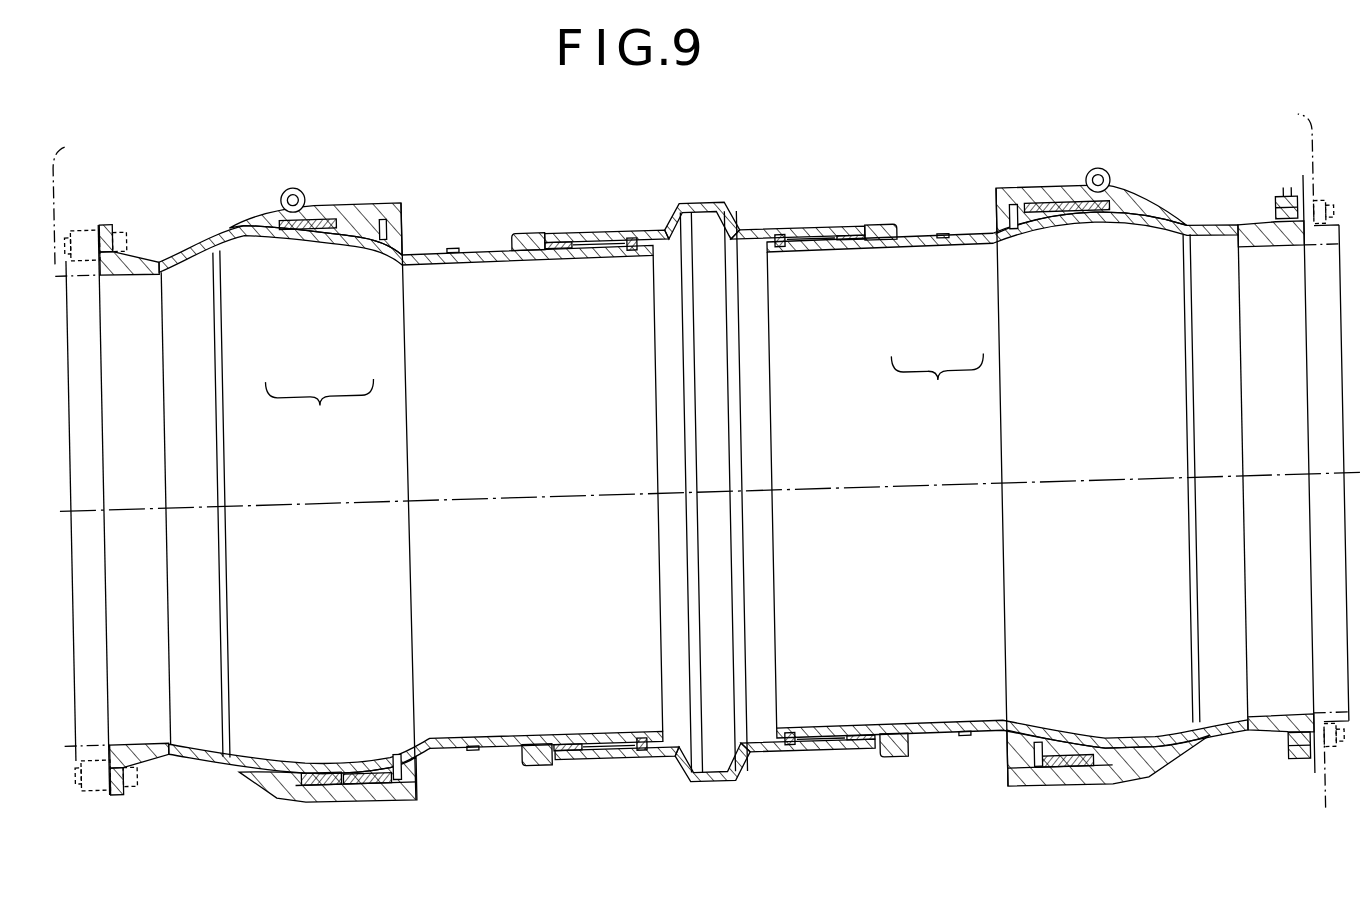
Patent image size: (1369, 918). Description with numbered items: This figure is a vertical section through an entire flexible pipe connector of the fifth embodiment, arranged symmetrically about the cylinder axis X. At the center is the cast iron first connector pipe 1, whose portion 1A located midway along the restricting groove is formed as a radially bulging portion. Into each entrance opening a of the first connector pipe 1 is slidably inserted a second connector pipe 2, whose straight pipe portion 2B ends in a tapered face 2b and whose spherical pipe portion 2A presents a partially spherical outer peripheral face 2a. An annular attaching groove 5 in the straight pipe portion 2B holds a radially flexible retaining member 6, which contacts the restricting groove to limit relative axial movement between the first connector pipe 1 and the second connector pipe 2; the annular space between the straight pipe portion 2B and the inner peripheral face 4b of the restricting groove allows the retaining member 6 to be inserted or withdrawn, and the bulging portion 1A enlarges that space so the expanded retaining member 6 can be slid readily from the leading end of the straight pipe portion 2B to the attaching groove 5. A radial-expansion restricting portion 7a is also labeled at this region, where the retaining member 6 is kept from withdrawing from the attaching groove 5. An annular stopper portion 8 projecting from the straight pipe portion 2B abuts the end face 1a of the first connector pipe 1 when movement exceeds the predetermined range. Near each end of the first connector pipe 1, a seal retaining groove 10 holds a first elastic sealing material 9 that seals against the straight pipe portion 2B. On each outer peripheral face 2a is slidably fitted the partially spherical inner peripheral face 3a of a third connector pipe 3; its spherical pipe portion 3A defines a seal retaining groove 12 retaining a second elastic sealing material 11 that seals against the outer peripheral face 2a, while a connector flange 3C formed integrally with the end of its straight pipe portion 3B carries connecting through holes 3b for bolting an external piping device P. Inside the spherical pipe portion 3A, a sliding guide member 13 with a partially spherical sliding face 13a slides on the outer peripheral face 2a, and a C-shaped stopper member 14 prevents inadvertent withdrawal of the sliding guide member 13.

The external piping device P is at (701, 465).
The cylinder axis X is at (470, 492).
The first connector pipe 1 is at (576, 229).
The bulging portion 1A is at (708, 203).
The end face 1a is at (517, 229).
The second connector pipe 2 is at (624, 394).
The spherical pipe portion 2A is at (330, 222).
The straight pipe portion 2B is at (425, 256).
The partially spherical outer peripheral face 2a is at (220, 232).
The tapered face 2b is at (661, 765).
The third connector pipe 3 is at (338, 194).
The spherical pipe portion 3A is at (268, 784).
The straight pipe portion 3B is at (132, 765).
The connector flange 3C is at (111, 207).
The partially spherical inner peripheral face 3a is at (240, 758).
The connecting through holes 3b is at (130, 219).
The inner peripheral face of the restricting groove 4b is at (752, 252).
The attaching groove 5 is at (639, 750).
The retaining member 6 is at (636, 236).
The seal ring (7) 7a is at (572, 246).
The annular stopper portion 8 is at (456, 241).
The first elastic sealing material 9 is at (556, 748).
The seal retaining groove 10 is at (527, 256).
The second elastic sealing material 11 is at (301, 791).
The seal retaining groove 12 is at (300, 219).
The sliding guide member 13 is at (361, 791).
The partially spherical sliding face 13a is at (330, 761).
The stopper member 14 is at (412, 748).
The entrance opening a is at (515, 742).